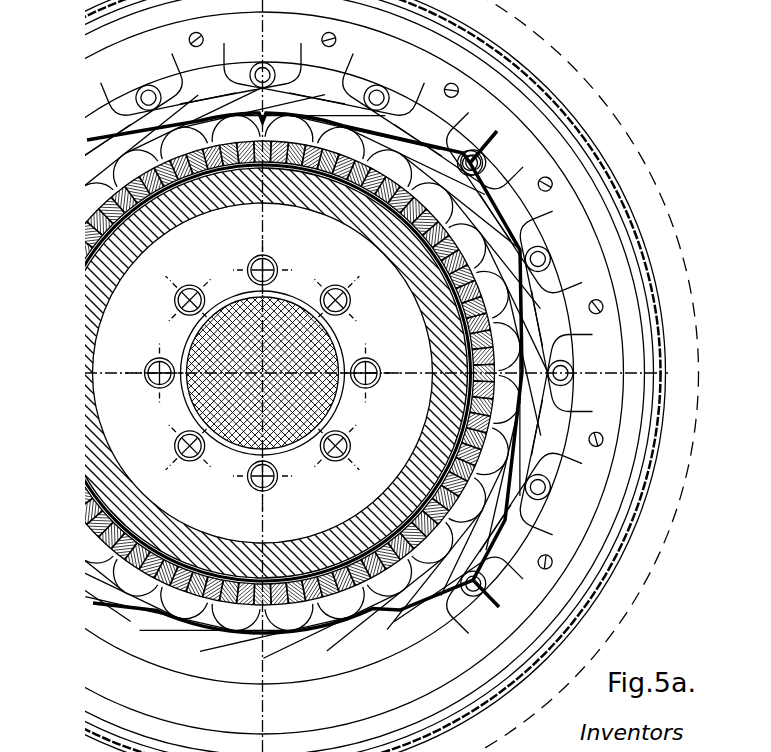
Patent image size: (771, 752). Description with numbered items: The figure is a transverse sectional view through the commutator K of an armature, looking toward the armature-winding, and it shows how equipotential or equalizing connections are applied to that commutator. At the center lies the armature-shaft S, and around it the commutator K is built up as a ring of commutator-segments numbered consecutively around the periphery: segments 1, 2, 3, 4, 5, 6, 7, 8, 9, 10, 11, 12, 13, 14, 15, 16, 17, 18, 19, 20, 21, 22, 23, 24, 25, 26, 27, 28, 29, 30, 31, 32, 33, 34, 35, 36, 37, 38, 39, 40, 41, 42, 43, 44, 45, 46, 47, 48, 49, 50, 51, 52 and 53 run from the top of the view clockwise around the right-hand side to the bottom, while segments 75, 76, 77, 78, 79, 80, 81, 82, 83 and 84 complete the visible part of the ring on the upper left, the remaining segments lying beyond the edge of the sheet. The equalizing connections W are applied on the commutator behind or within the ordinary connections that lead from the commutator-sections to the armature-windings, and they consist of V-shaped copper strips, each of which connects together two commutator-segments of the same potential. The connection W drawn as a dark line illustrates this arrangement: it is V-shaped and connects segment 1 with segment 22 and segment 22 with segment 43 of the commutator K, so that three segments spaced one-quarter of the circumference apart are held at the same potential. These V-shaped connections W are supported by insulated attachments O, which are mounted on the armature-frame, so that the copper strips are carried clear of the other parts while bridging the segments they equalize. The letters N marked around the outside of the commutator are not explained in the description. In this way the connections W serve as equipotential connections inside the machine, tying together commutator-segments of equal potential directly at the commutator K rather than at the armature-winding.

The commutator K is at (227, 165).
The armature-shaft S is at (312, 352).
The north pole brush position N is at (380, 658).
The insulated attachment O is at (495, 164).
The equalizing connection W is at (158, 66).
The commutator segment 1 is at (262, 123).
The armature slot 2 is at (353, 134).
The armature slot 3 is at (298, 131).
The armature slot 4 is at (318, 129).
The armature slot 5 is at (403, 161).
The armature slot 6 is at (351, 145).
The armature slot 7 is at (371, 148).
The armature slot 8 is at (447, 197).
The armature slot 9 is at (400, 171).
The armature slot 10 is at (419, 178).
The armature slot 11 is at (482, 243).
The armature slot 12 is at (442, 206).
The armature slot 13 is at (459, 218).
The armature slot 14 is at (505, 295).
The armature slot 15 is at (475, 250).
The armature slot 16 is at (489, 265).
The armature slot 17 is at (516, 351).
The armature slot 18 is at (497, 301).
The armature slot 19 is at (507, 318).
The armature slot 20 is at (514, 408).
The armature slot 21 is at (507, 355).
The commutator segment 22 is at (514, 374).
The armature slot 23 is at (500, 463).
The armature slot 24 is at (505, 410).
The armature slot 25 is at (507, 430).
The armature slot 26 is at (474, 514).
The armature slot 27 is at (491, 463).
The armature slot 28 is at (489, 483).
The armature slot 29 is at (437, 558).
The armature slot 30 is at (465, 511).
The armature slot 31 is at (459, 530).
The armature slot 32 is at (392, 592).
The armature slot 33 is at (429, 553).
The armature slot 34 is at (419, 570).
The armature slot 35 is at (340, 615).
The armature slot 36 is at (385, 585).
The armature slot 37 is at (371, 600).
The armature slot 38 is at (284, 627).
The armature slot 39 is at (335, 607).
The armature slot 40 is at (318, 619).
The armature slot 41 is at (227, 625).
The armature slot 42 is at (281, 617).
The commutator segment 43 is at (262, 625).
The armature slot 44 is at (171, 611).
The armature slot 45 is at (226, 615).
The armature slot 46 is at (207, 619).
The armature slot 47 is at (120, 585).
The armature slot 48 is at (173, 601).
The armature slot 49 is at (154, 600).
The armature slot 50 is at (79, 548).
The armature slot 51 is at (124, 575).
The armature slot 52 is at (106, 570).
The armature slot 53 is at (56, 502).
The armature slot 75 is at (97, 193).
The armature slot 76 is at (106, 178).
The armature slot 77 is at (184, 129).
The armature slot 78 is at (140, 161).
The armature slot 79 is at (154, 148).
The armature slot 80 is at (240, 119).
The armature slot 81 is at (190, 139).
The armature slot 82 is at (207, 129).
The armature slot 83 is at (298, 120).
The armature slot 84 is at (244, 129).